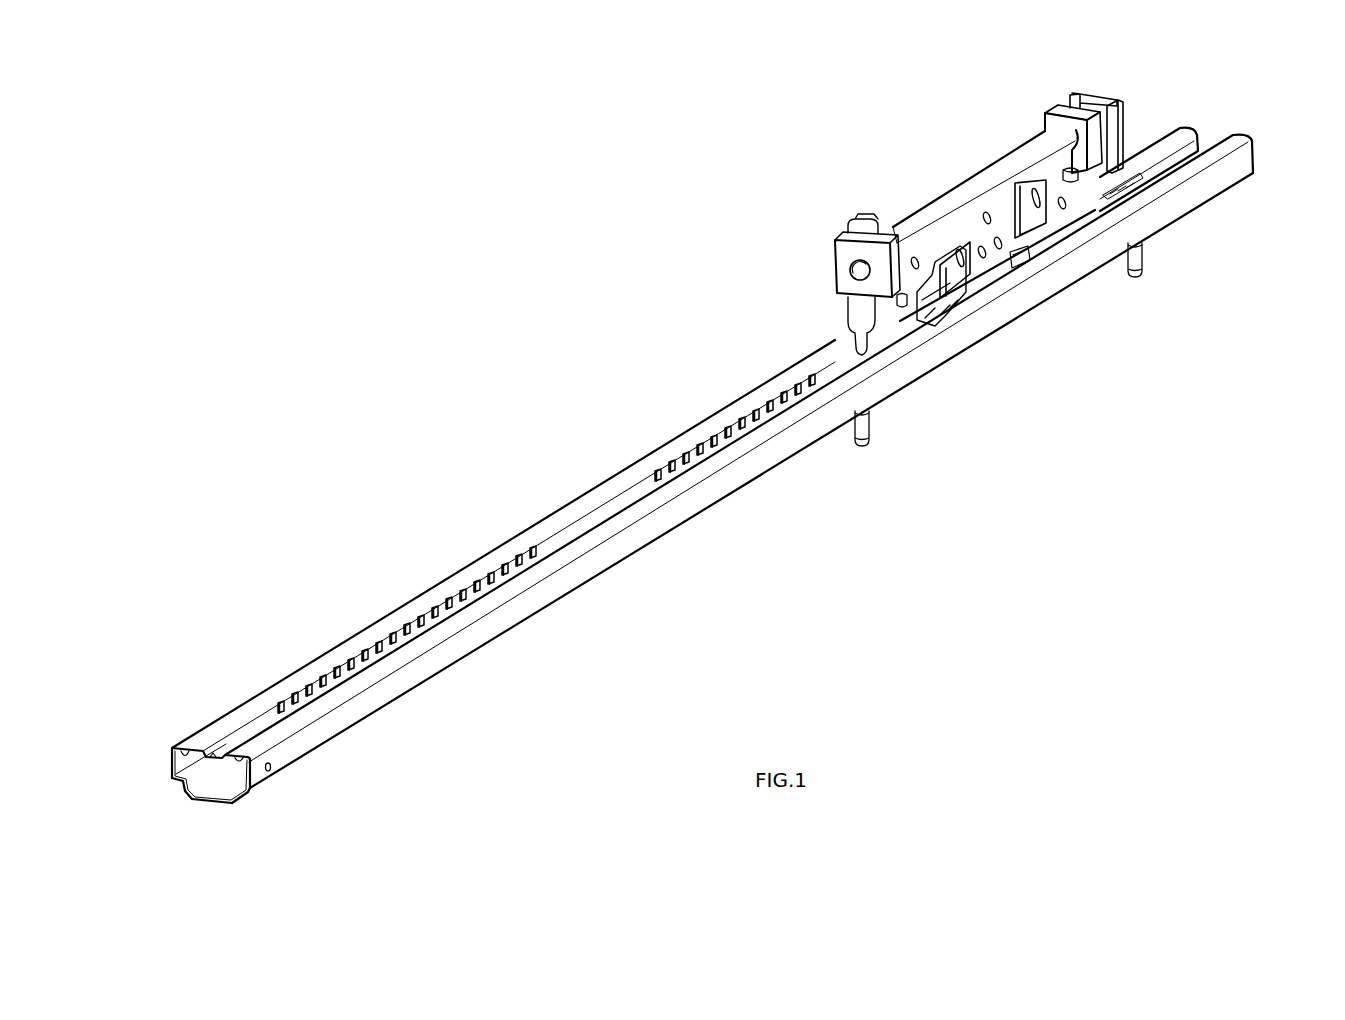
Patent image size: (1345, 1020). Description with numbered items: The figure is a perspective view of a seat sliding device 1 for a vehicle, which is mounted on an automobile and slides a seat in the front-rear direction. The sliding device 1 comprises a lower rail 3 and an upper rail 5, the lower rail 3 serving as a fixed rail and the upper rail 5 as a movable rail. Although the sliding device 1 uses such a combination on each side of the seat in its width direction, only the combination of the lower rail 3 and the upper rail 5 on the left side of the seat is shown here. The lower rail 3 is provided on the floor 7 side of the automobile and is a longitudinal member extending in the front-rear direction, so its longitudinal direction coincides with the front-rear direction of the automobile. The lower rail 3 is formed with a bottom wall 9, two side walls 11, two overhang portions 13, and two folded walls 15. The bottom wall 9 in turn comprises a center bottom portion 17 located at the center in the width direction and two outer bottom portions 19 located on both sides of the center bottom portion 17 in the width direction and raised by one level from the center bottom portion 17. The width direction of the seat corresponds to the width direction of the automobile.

The seat sliding device 1 is at (1280, 136).
The lower rail 3 is at (762, 463).
The upper rail 5 is at (961, 194).
The floor 7 is at (940, 397).
The bottom wall 9 is at (258, 857).
The side wall 11 is at (170, 758).
The overhang portion 13 is at (228, 716).
The folded wall 15 is at (172, 773).
The center bottom portion 17 is at (210, 800).
The outer bottom portion 19 is at (181, 787).